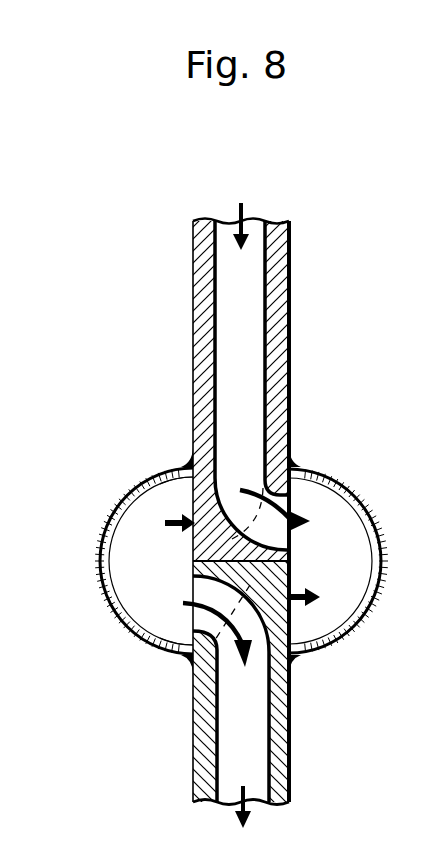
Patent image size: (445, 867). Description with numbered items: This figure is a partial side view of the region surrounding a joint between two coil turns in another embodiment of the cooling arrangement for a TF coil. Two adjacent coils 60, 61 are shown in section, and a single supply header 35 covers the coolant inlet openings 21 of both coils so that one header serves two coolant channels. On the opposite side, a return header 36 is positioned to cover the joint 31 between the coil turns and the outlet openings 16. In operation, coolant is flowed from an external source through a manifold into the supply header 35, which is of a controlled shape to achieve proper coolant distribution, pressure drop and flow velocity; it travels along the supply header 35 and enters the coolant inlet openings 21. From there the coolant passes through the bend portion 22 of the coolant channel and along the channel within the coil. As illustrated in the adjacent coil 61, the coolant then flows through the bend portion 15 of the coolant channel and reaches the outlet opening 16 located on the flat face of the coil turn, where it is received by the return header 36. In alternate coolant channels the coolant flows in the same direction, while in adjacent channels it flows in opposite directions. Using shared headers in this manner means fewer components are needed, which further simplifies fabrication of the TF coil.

The coil 60 is at (192, 295).
The adjacent coil 61 is at (193, 778).
The supply header 35 is at (96, 548).
The return header 36 is at (387, 529).
The joint 31 is at (196, 562).
The bend portion 22 is at (180, 465).
The bend portion 15 is at (293, 462).
The coolant inlet opening 21 is at (200, 498).
The outlet opening 16 is at (293, 503).